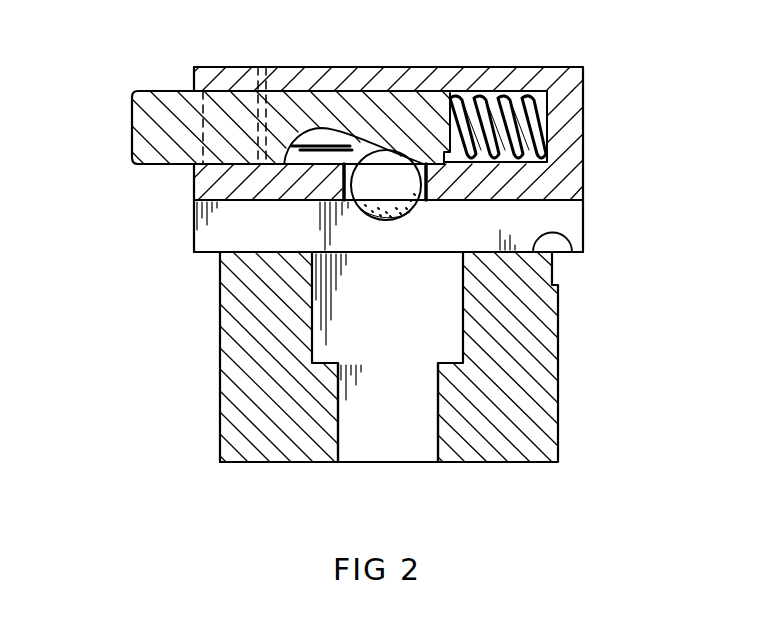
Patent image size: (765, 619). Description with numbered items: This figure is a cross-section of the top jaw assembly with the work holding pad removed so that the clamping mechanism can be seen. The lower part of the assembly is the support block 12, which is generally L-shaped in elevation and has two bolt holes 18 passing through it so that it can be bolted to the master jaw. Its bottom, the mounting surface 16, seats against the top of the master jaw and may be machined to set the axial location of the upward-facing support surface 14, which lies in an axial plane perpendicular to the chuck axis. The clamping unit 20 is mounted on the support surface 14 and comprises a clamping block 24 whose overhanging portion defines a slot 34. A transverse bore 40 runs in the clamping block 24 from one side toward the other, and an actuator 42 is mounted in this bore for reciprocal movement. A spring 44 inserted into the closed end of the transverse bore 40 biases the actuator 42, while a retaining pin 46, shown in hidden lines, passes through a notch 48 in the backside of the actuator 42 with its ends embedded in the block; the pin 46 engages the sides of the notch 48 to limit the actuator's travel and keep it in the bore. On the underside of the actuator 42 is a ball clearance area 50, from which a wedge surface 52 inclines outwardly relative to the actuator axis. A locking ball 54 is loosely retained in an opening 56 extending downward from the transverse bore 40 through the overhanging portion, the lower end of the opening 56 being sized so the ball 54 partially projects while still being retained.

The support block 12 is at (530, 405).
The support surface 14 is at (583, 253).
The mounting surface 16 is at (250, 462).
The bolt holes 18 is at (423, 440).
The clamping unit 20 is at (584, 104).
The clamping block 24 is at (317, 80).
The slot 34 is at (238, 240).
The transverse bore 40 is at (519, 95).
The actuator 42 is at (407, 93).
The spring 44 is at (570, 70).
The retaining pin 46 is at (262, 65).
The notch 48 is at (232, 130).
The ball clearance area 50 is at (306, 150).
The wedge surface 52 is at (428, 182).
The locking ball 54 is at (403, 221).
The opening 56 is at (393, 192).